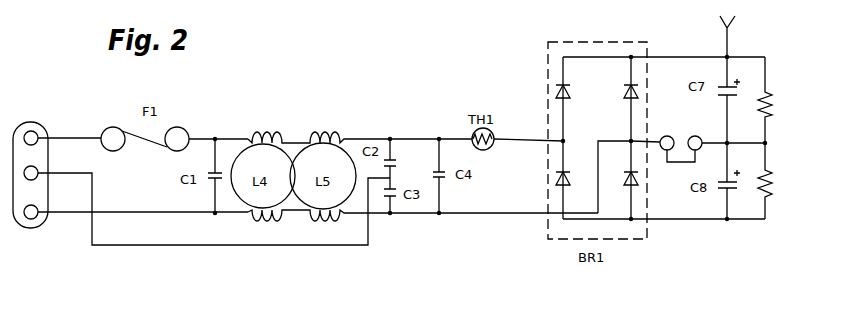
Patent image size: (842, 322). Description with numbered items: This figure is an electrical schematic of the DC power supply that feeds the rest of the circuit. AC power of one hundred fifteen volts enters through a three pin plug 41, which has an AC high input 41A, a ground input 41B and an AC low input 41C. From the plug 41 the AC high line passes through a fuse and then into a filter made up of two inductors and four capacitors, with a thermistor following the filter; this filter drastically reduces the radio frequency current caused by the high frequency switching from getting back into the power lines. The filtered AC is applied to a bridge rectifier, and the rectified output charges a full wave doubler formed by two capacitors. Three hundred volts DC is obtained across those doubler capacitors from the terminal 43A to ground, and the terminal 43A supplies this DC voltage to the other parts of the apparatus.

The 3 pin plug 41 is at (30, 117).
The AC high input 41A is at (40, 131).
The ground input 41B is at (38, 178).
The AC low input 41C is at (31, 220).
The terminal 43A is at (733, 40).